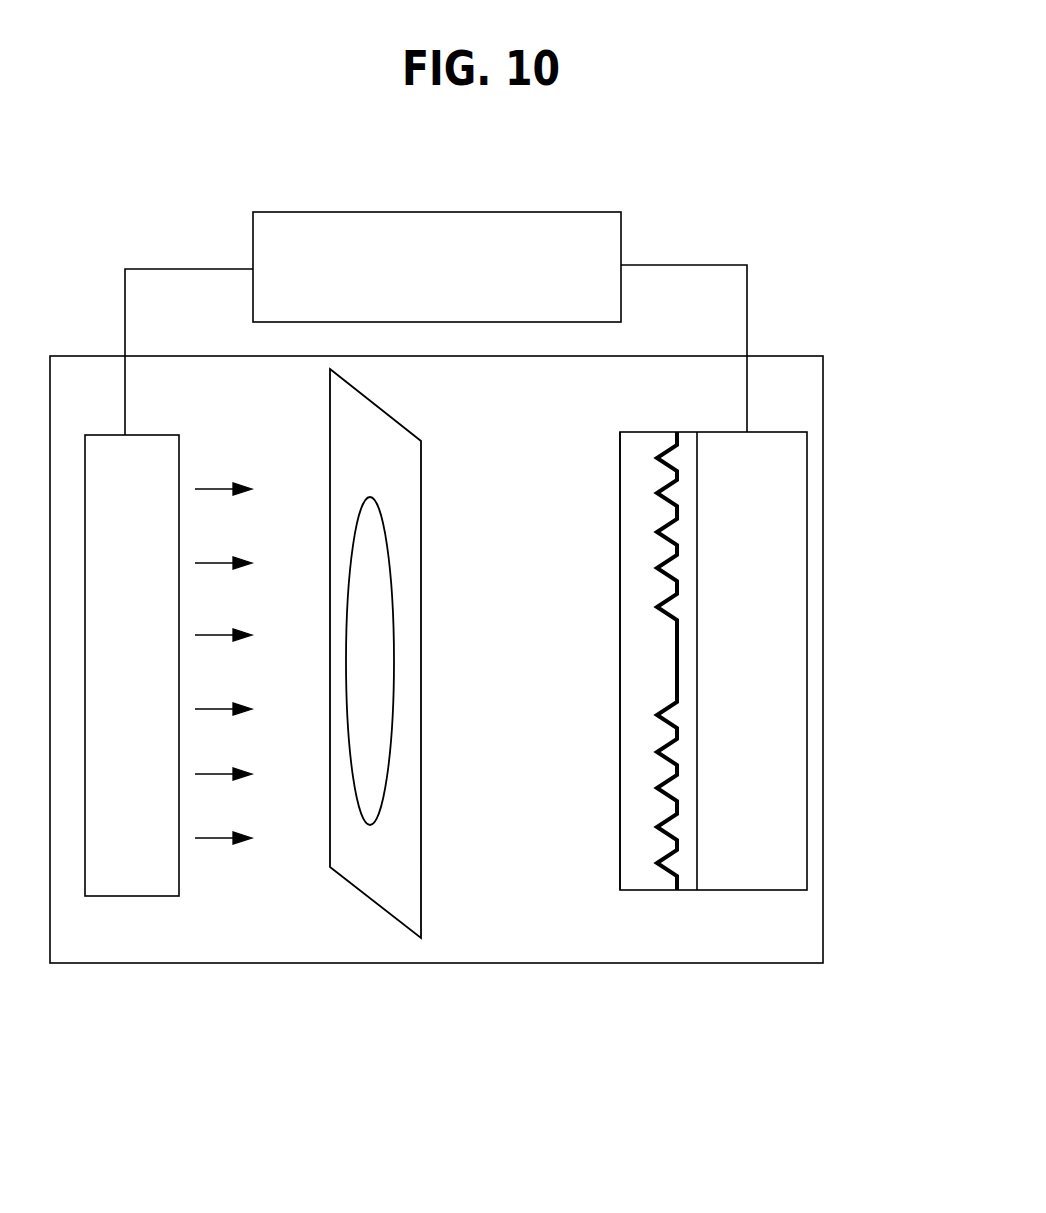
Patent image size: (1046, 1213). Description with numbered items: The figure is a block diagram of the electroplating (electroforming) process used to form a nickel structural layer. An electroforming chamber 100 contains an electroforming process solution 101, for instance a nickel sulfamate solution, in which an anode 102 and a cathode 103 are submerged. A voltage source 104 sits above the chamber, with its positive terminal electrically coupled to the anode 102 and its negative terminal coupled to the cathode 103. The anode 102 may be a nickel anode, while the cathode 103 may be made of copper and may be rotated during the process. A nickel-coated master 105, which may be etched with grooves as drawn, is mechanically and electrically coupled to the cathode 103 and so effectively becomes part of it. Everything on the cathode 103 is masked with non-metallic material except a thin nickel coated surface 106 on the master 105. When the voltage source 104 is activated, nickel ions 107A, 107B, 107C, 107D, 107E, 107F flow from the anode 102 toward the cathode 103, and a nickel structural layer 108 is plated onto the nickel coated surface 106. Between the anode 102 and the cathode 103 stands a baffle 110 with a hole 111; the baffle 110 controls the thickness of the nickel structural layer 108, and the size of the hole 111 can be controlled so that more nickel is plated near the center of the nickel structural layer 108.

The electroforming chamber 100 is at (788, 356).
The electroforming process solution 101 is at (688, 941).
The anode 102 is at (132, 665).
The cathode 103 is at (713, 661).
The voltage source 104 is at (437, 267).
The nickel-coated master 105 is at (687, 432).
The nickel coated surface 106 is at (677, 432).
The nickel ions 107A is at (223, 498).
The nickel ions 107B is at (223, 572).
The nickel ions 107C is at (223, 644).
The nickel ions 107D is at (223, 718).
The nickel ions 107E is at (223, 783).
The nickel ions 107F is at (223, 847).
The nickel structural layer 108 is at (620, 467).
The baffle 110 is at (403, 883).
The hole 111 is at (383, 699).